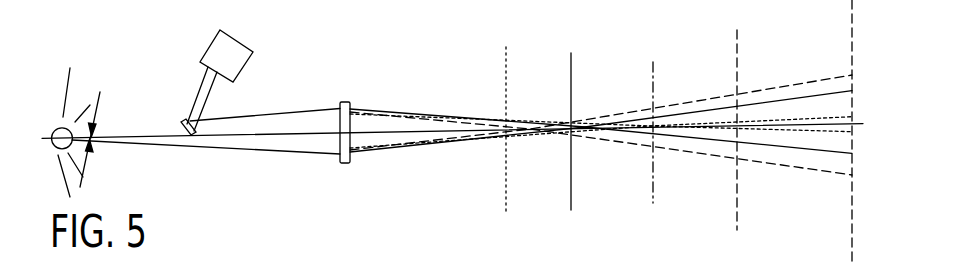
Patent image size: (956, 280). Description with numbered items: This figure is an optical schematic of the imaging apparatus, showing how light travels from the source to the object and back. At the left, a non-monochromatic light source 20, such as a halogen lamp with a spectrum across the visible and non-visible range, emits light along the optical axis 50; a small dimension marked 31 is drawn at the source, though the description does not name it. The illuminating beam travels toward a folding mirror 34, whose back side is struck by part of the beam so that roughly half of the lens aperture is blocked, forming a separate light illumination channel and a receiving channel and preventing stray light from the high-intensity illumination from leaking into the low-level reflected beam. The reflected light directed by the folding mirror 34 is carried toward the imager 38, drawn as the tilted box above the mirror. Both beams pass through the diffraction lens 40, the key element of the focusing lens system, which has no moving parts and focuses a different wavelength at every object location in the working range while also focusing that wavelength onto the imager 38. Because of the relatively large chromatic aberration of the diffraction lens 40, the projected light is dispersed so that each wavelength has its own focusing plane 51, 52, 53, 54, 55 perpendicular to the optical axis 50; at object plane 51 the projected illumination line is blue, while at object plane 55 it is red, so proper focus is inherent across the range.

The light source 20 is at (57, 128).
The source width dimension 31 is at (93, 140).
The folding mirror 34 is at (181, 130).
The imager 38 is at (248, 68).
The diffraction lens 40 is at (346, 101).
The optical axis 50 is at (863, 124).
The focusing plane 51 is at (505, 66).
The focusing plane 52 is at (572, 72).
The focusing plane 53 is at (653, 70).
The focusing plane 54 is at (735, 40).
The focusing plane 55 is at (850, 17).